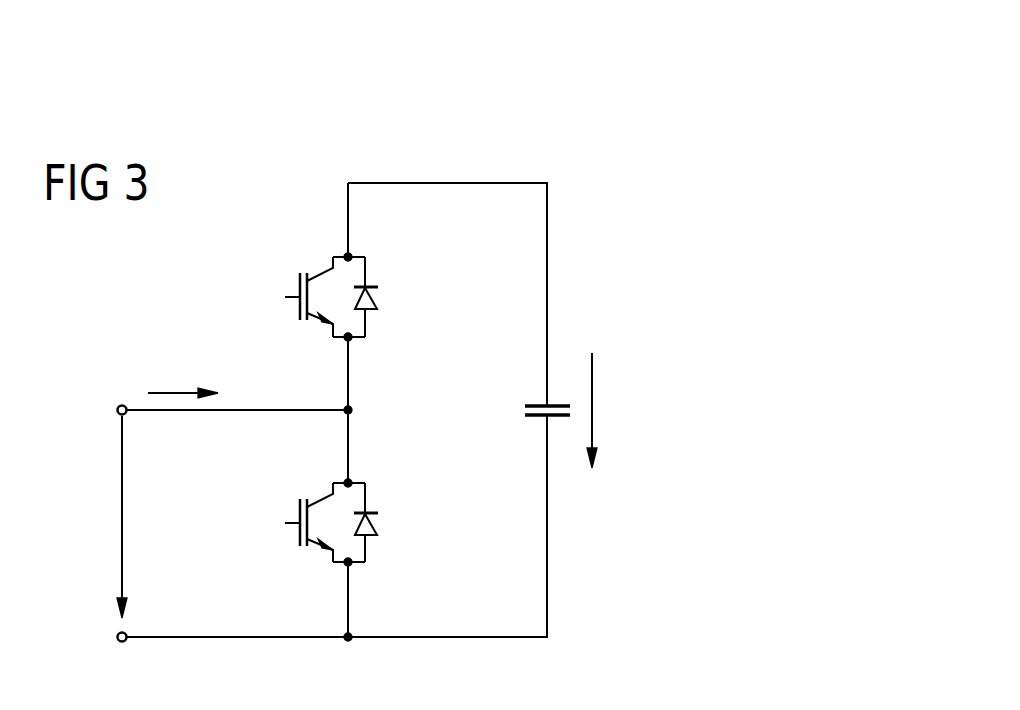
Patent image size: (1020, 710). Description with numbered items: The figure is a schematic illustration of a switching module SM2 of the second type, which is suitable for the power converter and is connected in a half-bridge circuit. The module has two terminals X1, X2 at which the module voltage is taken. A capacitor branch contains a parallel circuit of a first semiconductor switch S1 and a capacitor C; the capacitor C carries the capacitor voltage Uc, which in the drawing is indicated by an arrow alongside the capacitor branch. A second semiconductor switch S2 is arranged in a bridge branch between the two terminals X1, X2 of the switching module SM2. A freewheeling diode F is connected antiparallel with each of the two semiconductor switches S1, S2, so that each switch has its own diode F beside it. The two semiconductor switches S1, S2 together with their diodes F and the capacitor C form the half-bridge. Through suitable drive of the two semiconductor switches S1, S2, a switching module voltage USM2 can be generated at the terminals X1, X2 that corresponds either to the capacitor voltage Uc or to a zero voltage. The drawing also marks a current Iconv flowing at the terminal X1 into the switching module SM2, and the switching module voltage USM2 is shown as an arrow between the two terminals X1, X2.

The switching module SM2 is at (590, 153).
The first semiconductor switch S1 is at (293, 287).
The second semiconductor switch S2 is at (293, 514).
The freewheeling diode F is at (380, 297).
The capacitor C is at (522, 410).
The capacitor voltage Uc is at (608, 410).
The terminal X1 is at (117, 410).
The terminal X2 is at (117, 637).
The converter current Iconv is at (183, 376).
The switching module voltage USM2 is at (86, 517).